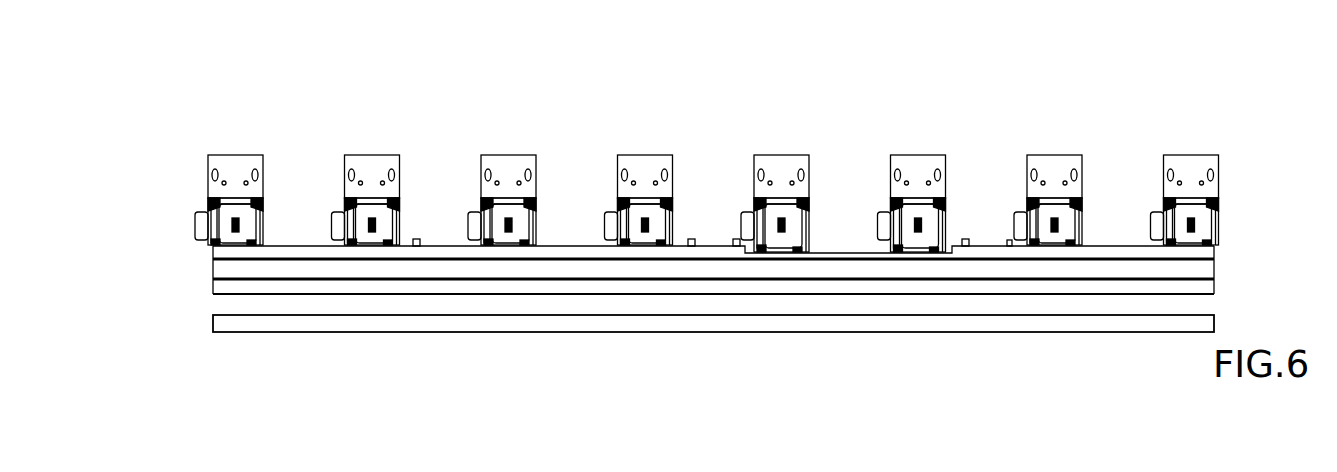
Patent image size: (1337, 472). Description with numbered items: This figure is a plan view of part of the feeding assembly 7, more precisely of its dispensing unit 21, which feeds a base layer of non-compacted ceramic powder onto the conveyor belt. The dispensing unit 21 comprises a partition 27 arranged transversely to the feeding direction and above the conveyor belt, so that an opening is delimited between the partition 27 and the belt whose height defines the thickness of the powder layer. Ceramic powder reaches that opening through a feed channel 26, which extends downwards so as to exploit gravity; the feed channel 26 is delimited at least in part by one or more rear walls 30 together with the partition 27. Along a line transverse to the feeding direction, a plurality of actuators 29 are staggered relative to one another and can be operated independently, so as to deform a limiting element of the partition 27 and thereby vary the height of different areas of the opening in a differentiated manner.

The feeding assembly 7 is at (955, 101).
The dispensing unit 21 is at (847, 113).
The feed channel 26 is at (245, 298).
The partition 27 is at (287, 250).
The actuators 29 is at (235, 207).
The rear walls 30 is at (1212, 285).